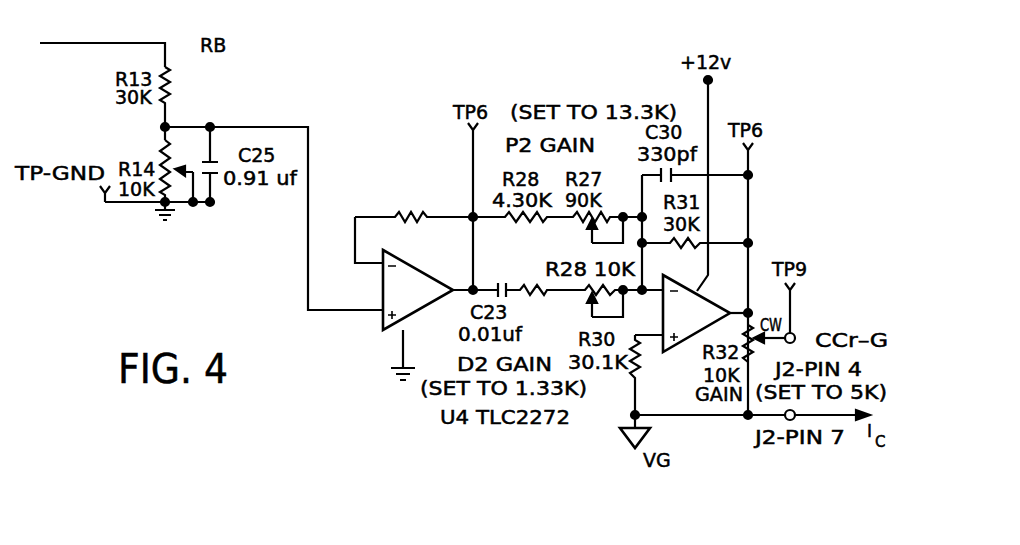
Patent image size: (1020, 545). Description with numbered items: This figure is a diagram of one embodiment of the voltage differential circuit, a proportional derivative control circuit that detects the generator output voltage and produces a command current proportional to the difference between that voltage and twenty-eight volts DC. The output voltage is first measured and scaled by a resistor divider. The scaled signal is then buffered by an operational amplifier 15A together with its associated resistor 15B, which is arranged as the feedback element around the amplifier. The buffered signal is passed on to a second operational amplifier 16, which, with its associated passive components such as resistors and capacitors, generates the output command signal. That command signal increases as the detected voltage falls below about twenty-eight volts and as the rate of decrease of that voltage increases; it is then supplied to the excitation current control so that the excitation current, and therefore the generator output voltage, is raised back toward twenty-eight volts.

The operational amplifier 15A is at (383, 318).
The resistor 15B is at (404, 158).
The operational amplifier 16 is at (670, 353).